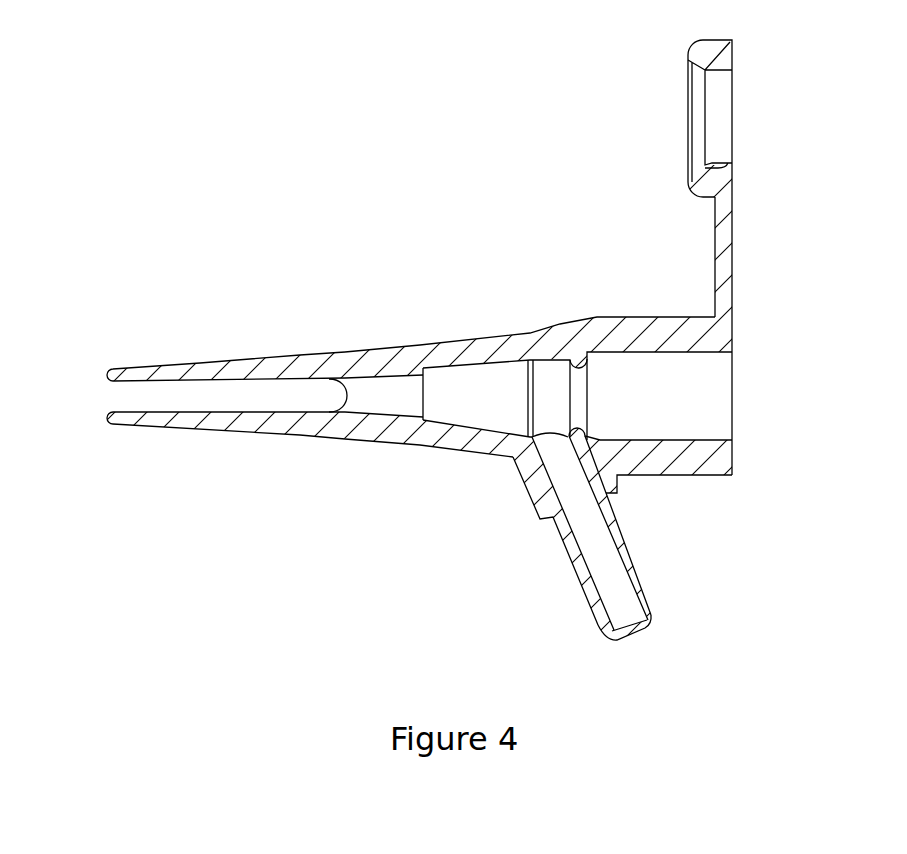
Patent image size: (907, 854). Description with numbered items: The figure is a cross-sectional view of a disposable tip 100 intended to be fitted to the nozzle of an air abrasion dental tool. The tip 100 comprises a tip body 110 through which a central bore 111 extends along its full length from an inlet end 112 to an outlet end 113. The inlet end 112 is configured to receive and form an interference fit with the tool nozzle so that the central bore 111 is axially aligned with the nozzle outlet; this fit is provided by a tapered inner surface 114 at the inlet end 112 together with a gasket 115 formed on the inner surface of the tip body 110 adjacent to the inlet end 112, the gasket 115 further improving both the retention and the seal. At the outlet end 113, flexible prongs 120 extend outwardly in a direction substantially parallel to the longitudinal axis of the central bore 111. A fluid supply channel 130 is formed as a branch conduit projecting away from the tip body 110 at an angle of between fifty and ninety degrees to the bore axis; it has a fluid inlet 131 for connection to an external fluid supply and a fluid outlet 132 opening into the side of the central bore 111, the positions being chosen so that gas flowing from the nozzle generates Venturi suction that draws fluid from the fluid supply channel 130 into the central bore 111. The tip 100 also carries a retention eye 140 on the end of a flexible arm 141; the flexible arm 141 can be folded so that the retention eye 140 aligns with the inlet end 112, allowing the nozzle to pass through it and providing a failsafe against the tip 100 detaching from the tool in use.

The disposable tip 100 is at (453, 427).
The tip body 110 is at (637, 333).
The central bore 111 is at (481, 392).
The inlet end 112 is at (723, 366).
The outlet end 113 is at (363, 395).
The tapered inner surface 114 is at (690, 437).
The gasket 115 is at (580, 433).
The flexible prong 120 is at (207, 418).
The fluid supply channel 130 is at (619, 594).
The fluid inlet 131 is at (623, 622).
The fluid outlet 132 is at (550, 440).
The retention eye 140 is at (723, 125).
The flexible arm 141 is at (725, 255).